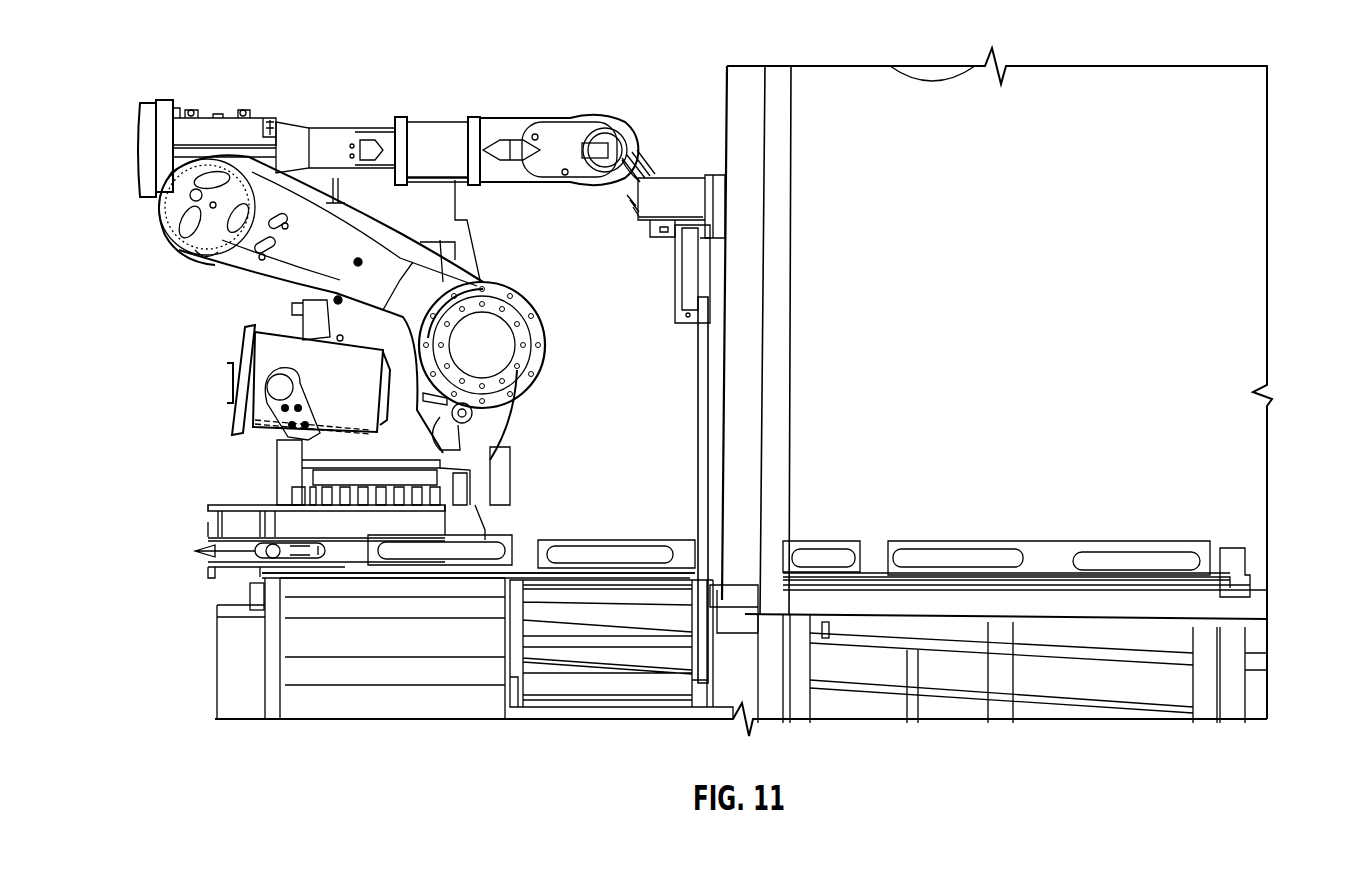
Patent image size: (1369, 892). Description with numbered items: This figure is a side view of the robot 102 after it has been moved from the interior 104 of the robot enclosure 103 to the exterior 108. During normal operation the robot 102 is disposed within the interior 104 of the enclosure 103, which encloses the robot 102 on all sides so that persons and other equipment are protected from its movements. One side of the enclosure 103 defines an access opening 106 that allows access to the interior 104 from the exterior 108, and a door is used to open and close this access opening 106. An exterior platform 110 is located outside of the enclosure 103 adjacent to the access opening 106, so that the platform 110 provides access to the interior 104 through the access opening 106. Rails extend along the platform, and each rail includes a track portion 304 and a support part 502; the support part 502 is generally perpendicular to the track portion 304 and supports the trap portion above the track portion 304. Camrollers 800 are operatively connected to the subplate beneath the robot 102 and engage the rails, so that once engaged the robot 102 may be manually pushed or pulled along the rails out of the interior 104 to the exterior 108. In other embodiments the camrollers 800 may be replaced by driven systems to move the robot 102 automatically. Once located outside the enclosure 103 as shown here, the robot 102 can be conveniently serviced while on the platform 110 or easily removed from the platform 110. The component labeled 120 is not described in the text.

The robot 102 is at (428, 118).
The robot enclosure 103 is at (748, 65).
The interior 104 is at (1246, 243).
The access opening 106 is at (690, 352).
The exterior 108 is at (608, 88).
The exterior platform 110 is at (658, 582).
The tray 120 is at (553, 531).
The track portion 304 is at (527, 590).
The support part 502 is at (360, 555).
The camrollers 800 is at (265, 552).